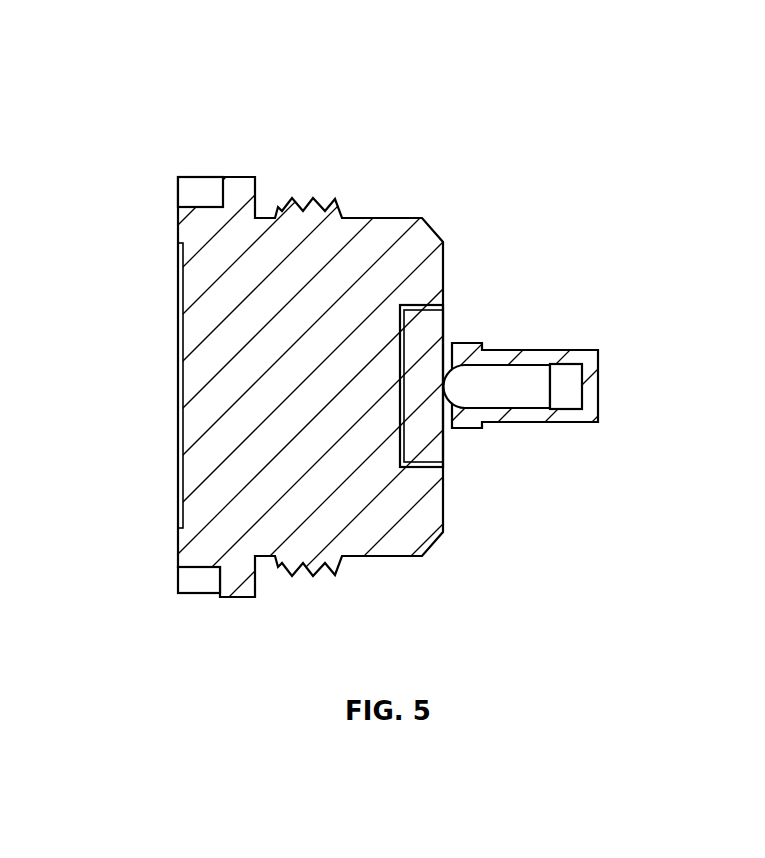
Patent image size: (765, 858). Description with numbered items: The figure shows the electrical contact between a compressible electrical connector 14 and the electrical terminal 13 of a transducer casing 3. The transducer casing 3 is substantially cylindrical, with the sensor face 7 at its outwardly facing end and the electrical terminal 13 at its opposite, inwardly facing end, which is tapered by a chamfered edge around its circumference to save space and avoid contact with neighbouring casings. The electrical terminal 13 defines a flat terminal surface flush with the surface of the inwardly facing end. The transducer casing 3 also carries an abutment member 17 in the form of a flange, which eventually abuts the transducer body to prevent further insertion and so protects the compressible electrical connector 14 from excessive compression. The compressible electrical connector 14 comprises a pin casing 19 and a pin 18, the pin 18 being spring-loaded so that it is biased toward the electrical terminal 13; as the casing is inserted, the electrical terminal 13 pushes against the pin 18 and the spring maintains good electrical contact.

The transducer casing 3 is at (382, 372).
The sensor face 7 is at (382, 419).
The electrical terminal 13 is at (428, 338).
The compressible electrical connector 14 is at (401, 388).
The abutment member 17 is at (203, 597).
The pin 18 is at (510, 388).
The pin casing 19 is at (583, 352).